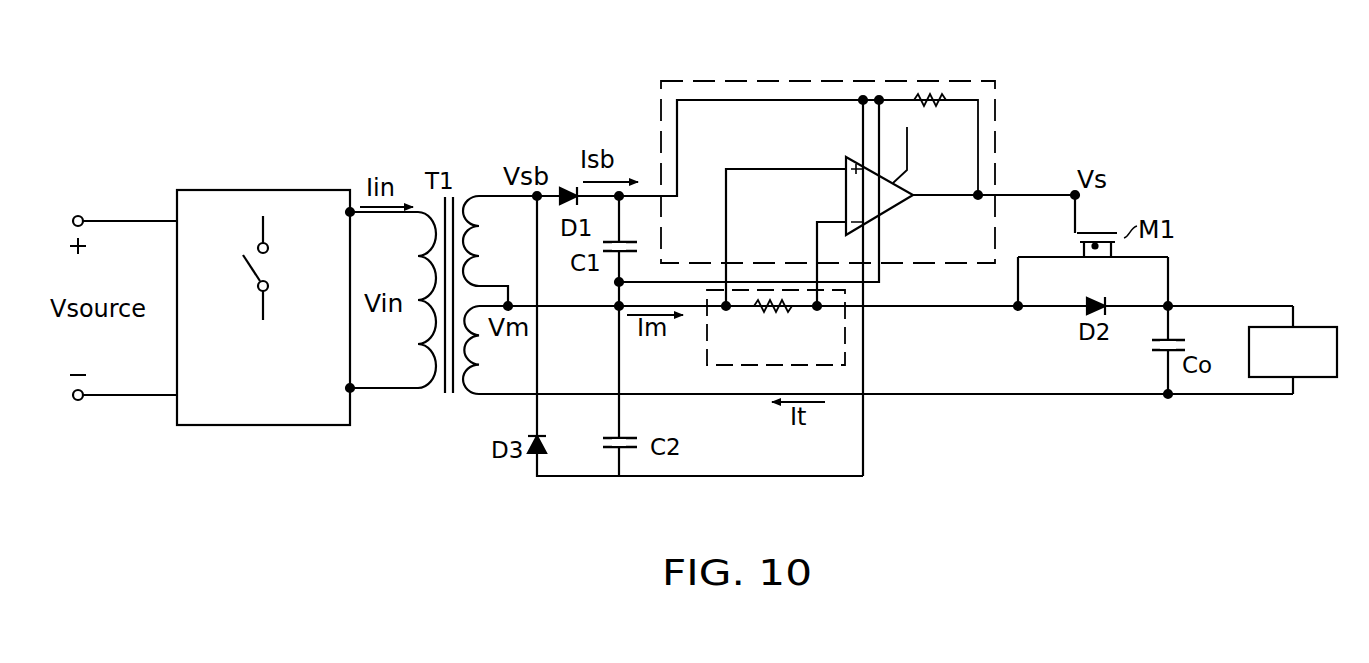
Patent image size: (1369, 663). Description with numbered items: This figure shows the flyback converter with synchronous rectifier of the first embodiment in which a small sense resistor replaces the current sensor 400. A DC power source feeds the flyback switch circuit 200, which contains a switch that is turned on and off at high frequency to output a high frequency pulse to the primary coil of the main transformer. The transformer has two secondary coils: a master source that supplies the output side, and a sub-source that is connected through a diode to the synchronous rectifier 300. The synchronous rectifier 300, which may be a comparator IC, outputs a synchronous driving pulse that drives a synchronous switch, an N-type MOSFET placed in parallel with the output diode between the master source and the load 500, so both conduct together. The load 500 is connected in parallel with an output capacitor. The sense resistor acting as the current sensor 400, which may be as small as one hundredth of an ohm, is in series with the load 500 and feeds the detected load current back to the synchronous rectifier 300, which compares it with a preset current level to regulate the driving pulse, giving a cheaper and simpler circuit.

The flyback switch circuit 200 is at (237, 204).
The synchronous rectifier 300 is at (830, 82).
The current sensor 400 is at (835, 352).
The load 500 is at (1326, 328).